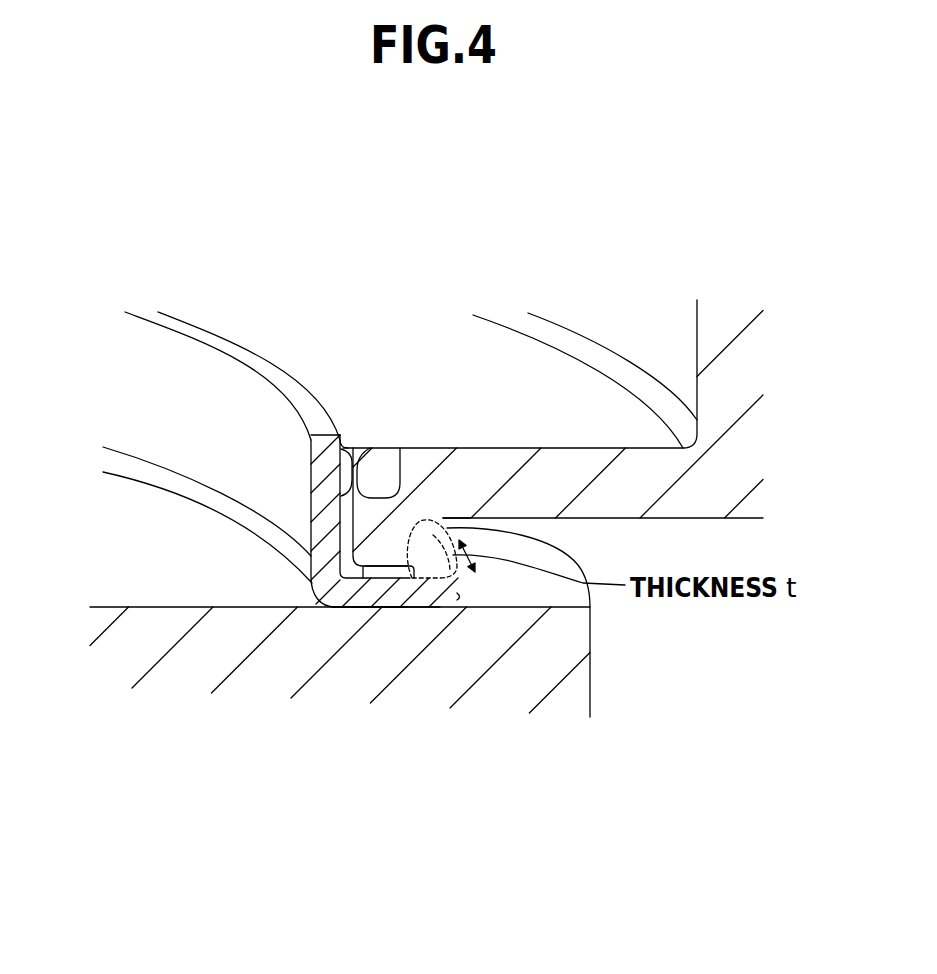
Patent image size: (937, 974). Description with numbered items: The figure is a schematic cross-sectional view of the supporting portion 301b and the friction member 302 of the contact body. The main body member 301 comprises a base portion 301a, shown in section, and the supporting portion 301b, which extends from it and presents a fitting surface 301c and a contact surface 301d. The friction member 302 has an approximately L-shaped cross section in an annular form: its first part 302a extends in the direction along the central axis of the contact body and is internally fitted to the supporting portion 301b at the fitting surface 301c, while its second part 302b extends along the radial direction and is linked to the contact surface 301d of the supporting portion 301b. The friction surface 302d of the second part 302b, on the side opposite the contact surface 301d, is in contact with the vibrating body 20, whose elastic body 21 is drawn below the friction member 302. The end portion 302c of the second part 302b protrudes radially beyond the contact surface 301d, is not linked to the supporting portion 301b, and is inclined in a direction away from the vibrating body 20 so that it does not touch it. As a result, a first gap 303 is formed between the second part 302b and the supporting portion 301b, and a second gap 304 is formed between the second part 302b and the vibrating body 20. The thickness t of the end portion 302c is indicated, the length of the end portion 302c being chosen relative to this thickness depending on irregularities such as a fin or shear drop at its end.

The main body member 301 is at (686, 123).
The base portion 301a is at (730, 365).
The supporting portion 301b is at (625, 480).
The fitting surface 301c is at (357, 500).
The contact surface 301d is at (386, 562).
The friction member 302 is at (423, 687).
The first part 302a is at (310, 437).
The second part 302b is at (458, 628).
The end portion of second part 302c is at (440, 587).
The friction surface of second part 302d is at (332, 608).
The first gap 303 is at (437, 537).
The second gap 304 is at (460, 597).
The elastic body 21 is at (340, 689).
The vibrating body 20 is at (340, 715).